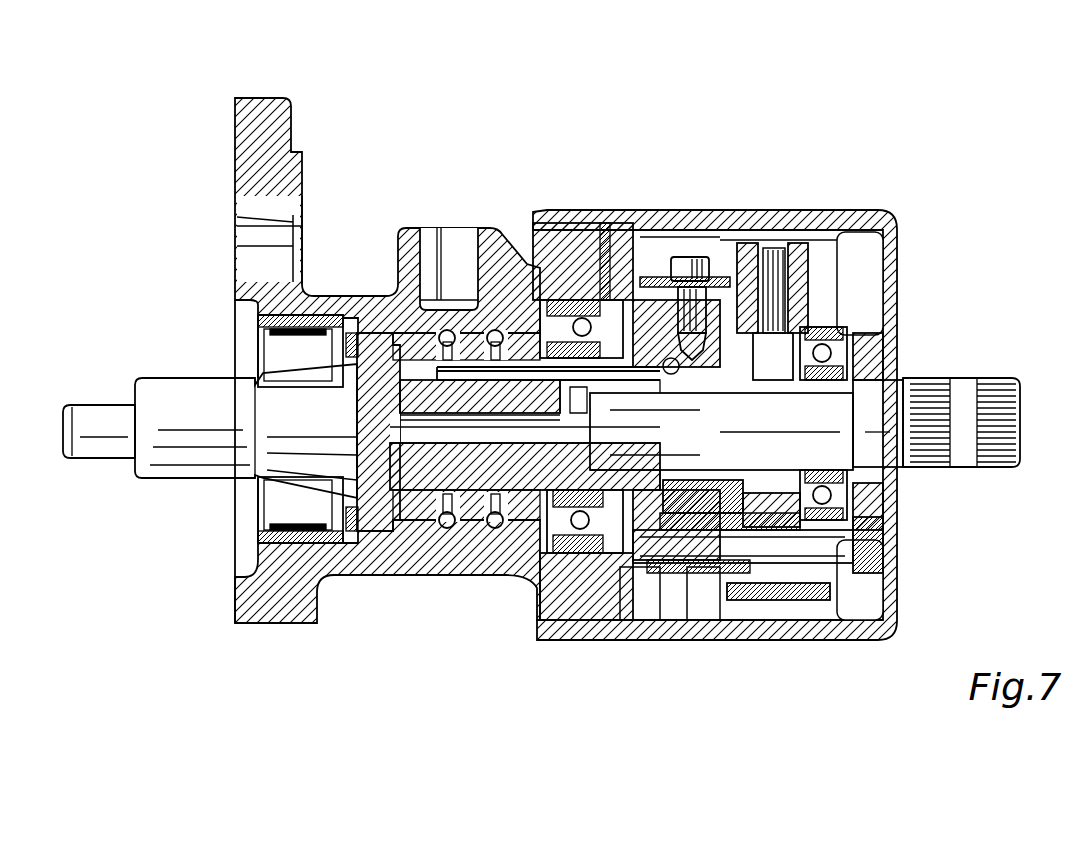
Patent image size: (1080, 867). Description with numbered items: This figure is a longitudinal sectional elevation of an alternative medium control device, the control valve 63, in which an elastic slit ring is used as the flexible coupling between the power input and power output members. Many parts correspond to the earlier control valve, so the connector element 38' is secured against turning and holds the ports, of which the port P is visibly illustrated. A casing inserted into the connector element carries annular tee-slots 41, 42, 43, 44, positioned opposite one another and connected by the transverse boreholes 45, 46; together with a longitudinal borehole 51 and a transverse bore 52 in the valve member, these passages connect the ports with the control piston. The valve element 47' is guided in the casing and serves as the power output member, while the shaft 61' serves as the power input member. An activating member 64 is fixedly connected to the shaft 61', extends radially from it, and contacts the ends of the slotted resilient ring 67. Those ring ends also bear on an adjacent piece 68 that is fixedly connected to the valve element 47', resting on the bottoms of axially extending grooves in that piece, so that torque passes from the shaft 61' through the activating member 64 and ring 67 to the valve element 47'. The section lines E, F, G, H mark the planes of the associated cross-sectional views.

The connector element 38' is at (387, 360).
The port P is at (447, 330).
The annular tee-slot 41 is at (452, 515).
The annular tee-slot 42 is at (440, 522).
The annular tee-slot 43 is at (493, 522).
The annular tee-slot 44 is at (500, 516).
The transverse borehole 45 is at (490, 332).
The transverse borehole 46 is at (558, 225).
The valve element 47' is at (661, 509).
The longitudinal borehole 51 is at (636, 300).
The transverse bore 52 is at (675, 237).
The shaft 61' is at (990, 383).
The control valve 63 is at (850, 68).
The activating member 64 is at (805, 300).
The slotted resilient ring 67 is at (812, 598).
The adjacent piece 68 is at (882, 212).
The section line E is at (700, 215).
The section line F is at (755, 695).
The section line G is at (722, 190).
The section line H is at (720, 655).